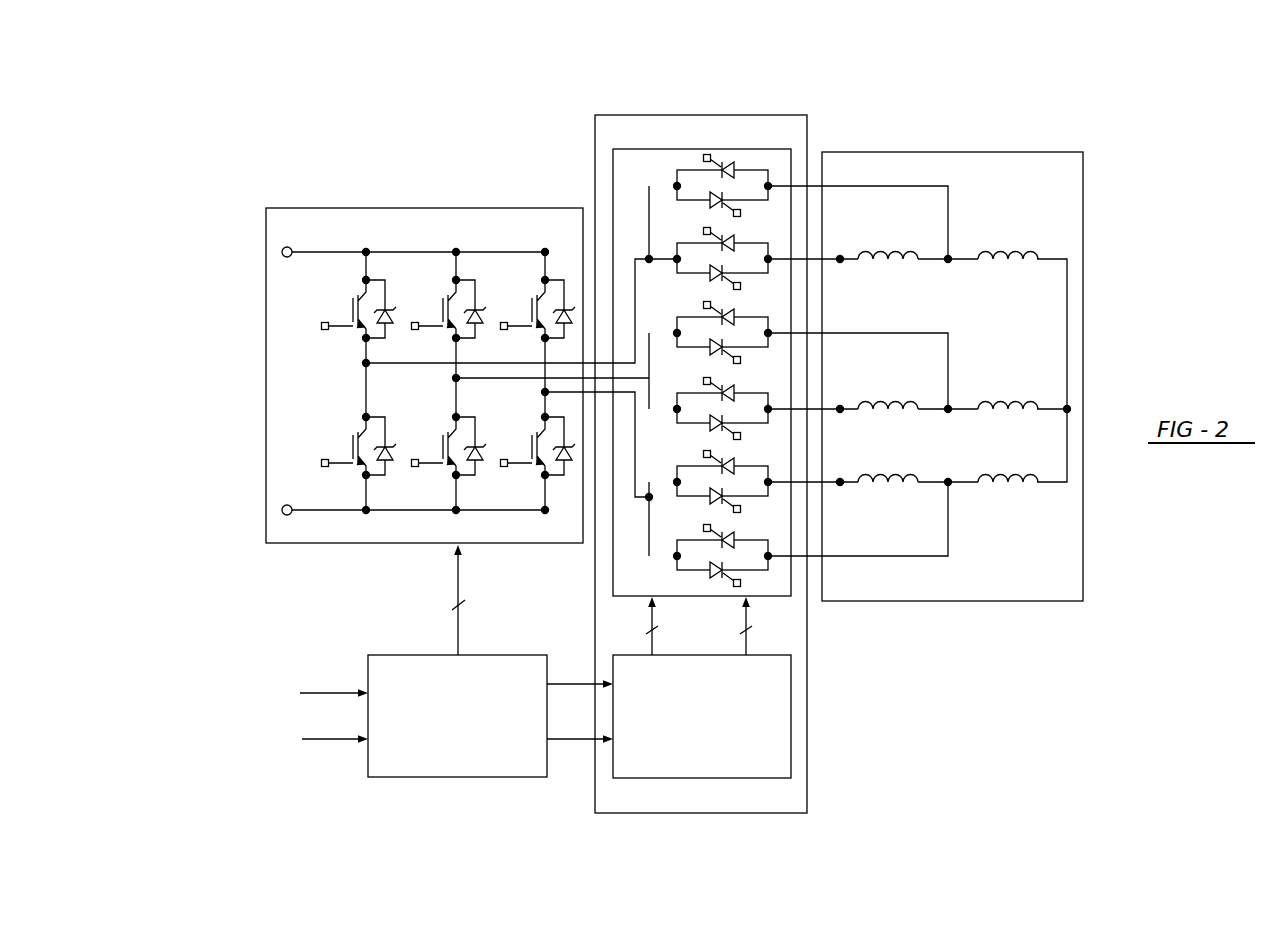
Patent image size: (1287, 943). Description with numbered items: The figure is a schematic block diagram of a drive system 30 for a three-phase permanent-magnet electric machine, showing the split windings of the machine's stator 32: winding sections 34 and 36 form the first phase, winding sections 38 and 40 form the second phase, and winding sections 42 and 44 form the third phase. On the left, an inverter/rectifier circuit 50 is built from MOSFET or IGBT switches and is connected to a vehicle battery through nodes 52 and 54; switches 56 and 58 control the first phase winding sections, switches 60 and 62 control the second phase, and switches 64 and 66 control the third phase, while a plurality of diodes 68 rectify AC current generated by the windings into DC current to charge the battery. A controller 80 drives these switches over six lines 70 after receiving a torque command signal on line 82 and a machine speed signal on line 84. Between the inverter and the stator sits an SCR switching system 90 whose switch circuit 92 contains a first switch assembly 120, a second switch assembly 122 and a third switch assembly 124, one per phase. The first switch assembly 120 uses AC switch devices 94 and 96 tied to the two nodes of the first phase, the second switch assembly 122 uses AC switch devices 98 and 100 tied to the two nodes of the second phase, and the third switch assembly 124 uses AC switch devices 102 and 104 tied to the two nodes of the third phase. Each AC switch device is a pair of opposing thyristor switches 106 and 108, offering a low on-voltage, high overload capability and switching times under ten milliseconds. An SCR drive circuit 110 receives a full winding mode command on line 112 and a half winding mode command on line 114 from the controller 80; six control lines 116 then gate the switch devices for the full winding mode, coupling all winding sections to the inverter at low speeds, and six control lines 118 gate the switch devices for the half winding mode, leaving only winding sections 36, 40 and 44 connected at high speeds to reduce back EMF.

The drive system 30 is at (978, 88).
The stator 32 is at (1025, 152).
The winding section 34 is at (910, 250).
The winding section 36 is at (1000, 250).
The winding section 38 is at (898, 410).
The winding section 40 is at (998, 410).
The winding section 42 is at (898, 484).
The winding section 44 is at (1000, 484).
The inverter/rectifier circuit 50 is at (348, 208).
The node 52 is at (282, 252).
The node 54 is at (282, 510).
The switch 56 is at (368, 280).
The switch 58 is at (350, 448).
The switch 60 is at (440, 312).
The switch 62 is at (440, 448).
The switch 64 is at (528, 312).
The switch 66 is at (528, 448).
The diode 68 is at (388, 310).
The lines 70 is at (458, 585).
The controller 80 is at (418, 778).
The line 82 is at (325, 690).
The line 84 is at (337, 742).
The SCR switching system 90 is at (765, 115).
The switch circuit 92 is at (768, 148).
The AC switch device 94 is at (713, 151).
The AC switch device 96 is at (700, 282).
The AC switch device 98 is at (703, 357).
The AC switch device 100 is at (700, 432).
The AC switch device 102 is at (705, 505).
The AC switch device 104 is at (698, 580).
The thyristor switch 106 is at (731, 162).
The thyristor switch 108 is at (706, 202).
The SCR drive circuit 110 is at (791, 700).
The line 112 is at (572, 684).
The line 114 is at (570, 741).
The control lines 116 is at (642, 646).
The control lines 118 is at (747, 642).
The first switch assembly 120 is at (640, 205).
The second switch assembly 122 is at (776, 376).
The third switch assembly 124 is at (776, 523).